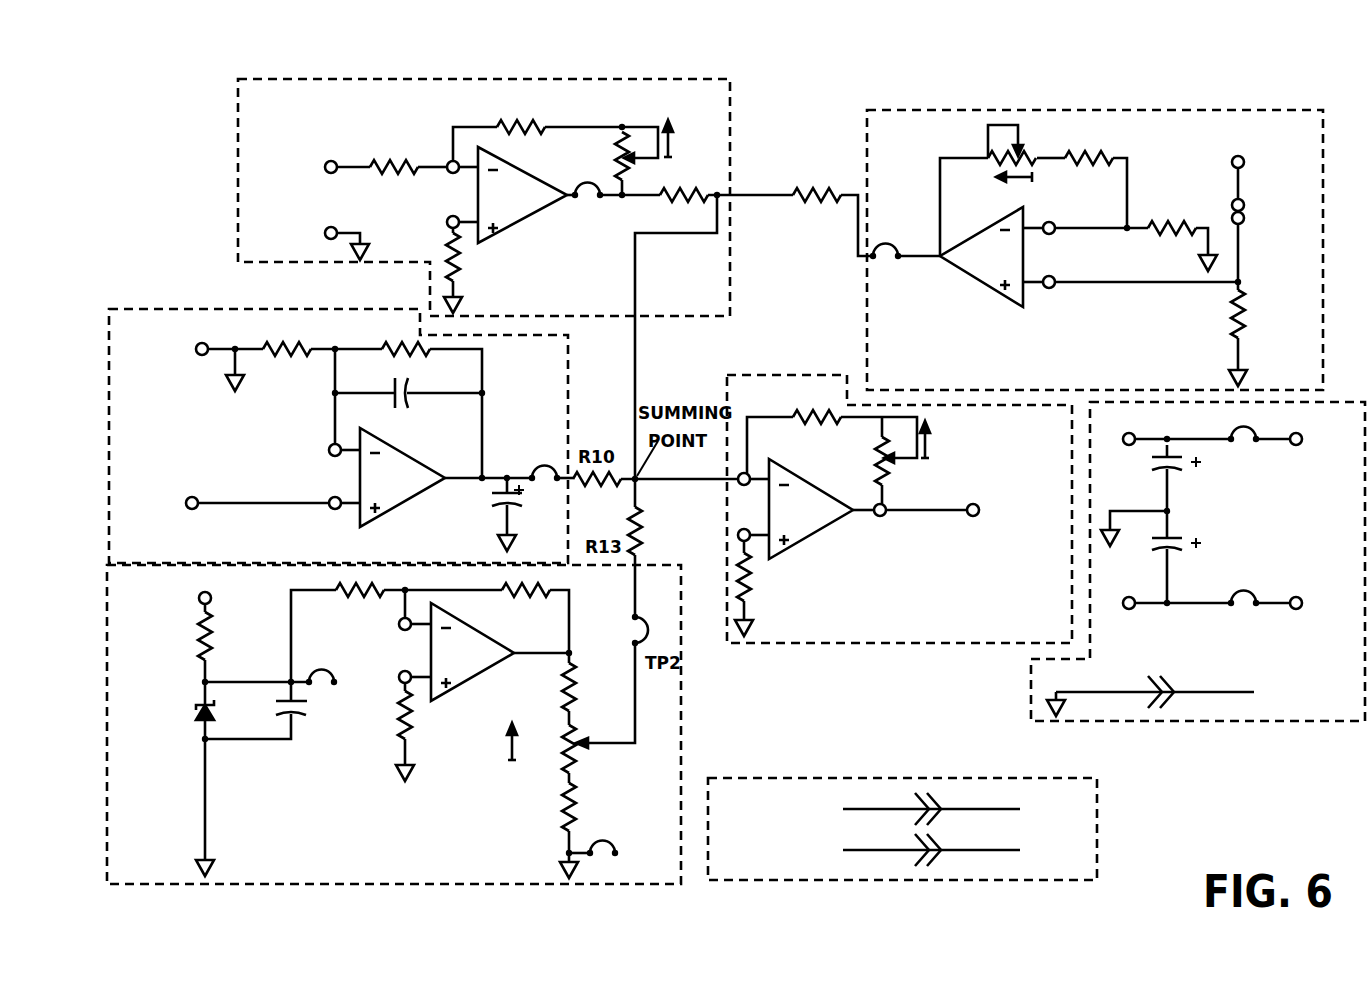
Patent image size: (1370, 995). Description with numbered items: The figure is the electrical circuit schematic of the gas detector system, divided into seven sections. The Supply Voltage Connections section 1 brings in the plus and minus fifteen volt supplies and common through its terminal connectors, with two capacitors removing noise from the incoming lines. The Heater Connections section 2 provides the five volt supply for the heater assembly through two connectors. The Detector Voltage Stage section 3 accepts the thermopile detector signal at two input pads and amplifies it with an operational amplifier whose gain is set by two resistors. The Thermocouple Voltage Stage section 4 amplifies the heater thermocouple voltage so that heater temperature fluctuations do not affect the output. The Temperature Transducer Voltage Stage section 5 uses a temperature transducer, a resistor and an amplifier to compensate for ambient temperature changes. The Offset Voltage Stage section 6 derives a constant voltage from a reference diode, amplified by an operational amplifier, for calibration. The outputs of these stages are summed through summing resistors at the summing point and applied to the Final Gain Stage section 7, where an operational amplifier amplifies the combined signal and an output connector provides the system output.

The Supply Voltage Connections section 1 is at (1192, 578).
The Heater Connections section 2 is at (902, 848).
The Detector Voltage Stage section 3 is at (330, 417).
The Thermocouple Voltage Stage section 4 is at (555, 260).
The Temperature Transducer Voltage Stage section 5 is at (1097, 233).
The Offset Voltage Stage section 6 is at (394, 738).
The Final Gain Stage section 7 is at (899, 526).